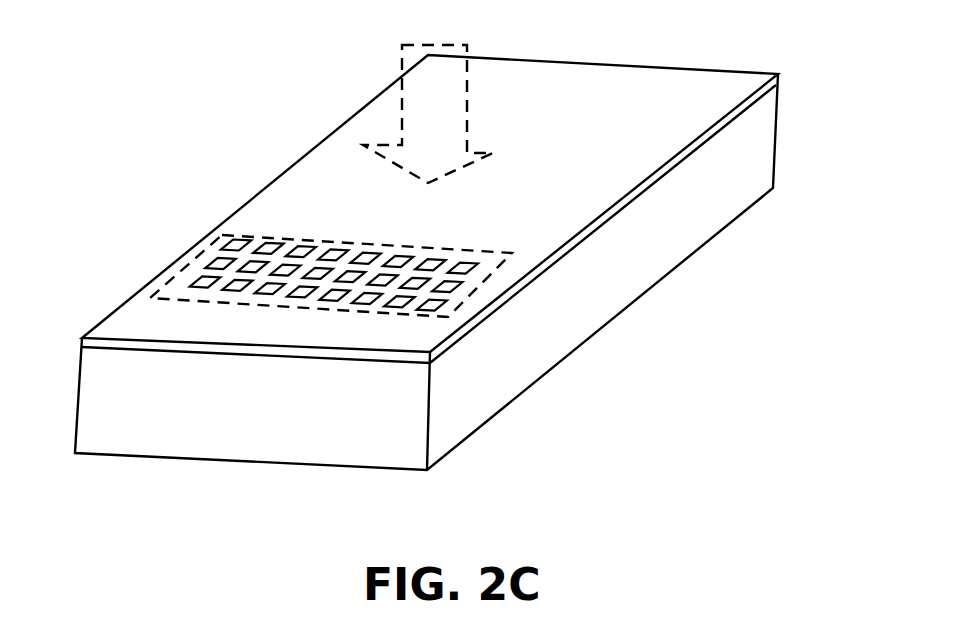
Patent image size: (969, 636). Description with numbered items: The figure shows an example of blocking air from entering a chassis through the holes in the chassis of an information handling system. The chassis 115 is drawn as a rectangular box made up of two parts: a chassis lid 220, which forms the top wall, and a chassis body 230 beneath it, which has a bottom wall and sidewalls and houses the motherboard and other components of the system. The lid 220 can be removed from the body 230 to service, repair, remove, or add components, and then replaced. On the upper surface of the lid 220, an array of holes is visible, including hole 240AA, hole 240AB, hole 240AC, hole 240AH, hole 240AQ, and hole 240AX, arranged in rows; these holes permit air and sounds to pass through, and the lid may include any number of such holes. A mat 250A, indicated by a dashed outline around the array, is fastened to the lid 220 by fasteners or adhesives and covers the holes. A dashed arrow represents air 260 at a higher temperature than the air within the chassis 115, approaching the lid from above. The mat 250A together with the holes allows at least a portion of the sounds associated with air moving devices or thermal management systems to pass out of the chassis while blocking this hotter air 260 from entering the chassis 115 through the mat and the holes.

The chassis 115 is at (463, 242).
The chassis lid 220 is at (755, 72).
The chassis body 230 is at (146, 82).
The air 260 is at (428, 48).
The mat 250A is at (437, 250).
The hole 240AA is at (238, 240).
The hole 240AB is at (272, 242).
The hole 240AC is at (303, 244).
The hole 240AH is at (467, 262).
The hole 240AX is at (445, 304).
The hole 240AQ is at (197, 281).